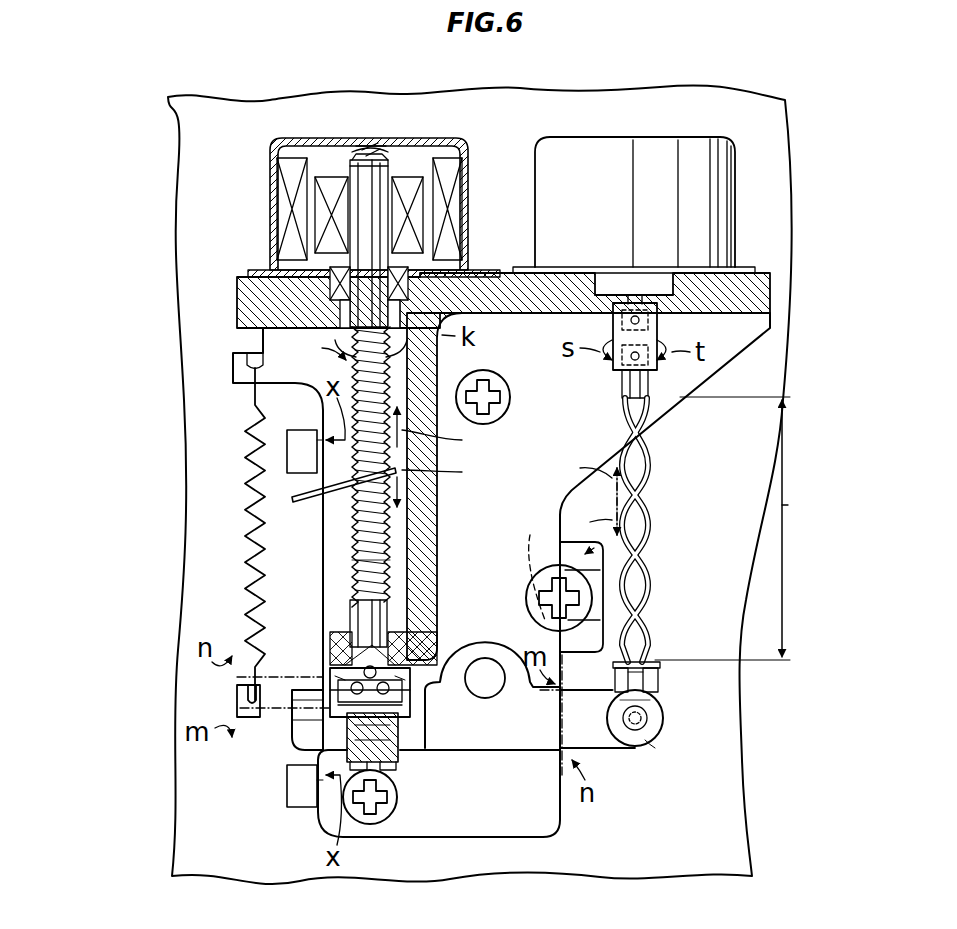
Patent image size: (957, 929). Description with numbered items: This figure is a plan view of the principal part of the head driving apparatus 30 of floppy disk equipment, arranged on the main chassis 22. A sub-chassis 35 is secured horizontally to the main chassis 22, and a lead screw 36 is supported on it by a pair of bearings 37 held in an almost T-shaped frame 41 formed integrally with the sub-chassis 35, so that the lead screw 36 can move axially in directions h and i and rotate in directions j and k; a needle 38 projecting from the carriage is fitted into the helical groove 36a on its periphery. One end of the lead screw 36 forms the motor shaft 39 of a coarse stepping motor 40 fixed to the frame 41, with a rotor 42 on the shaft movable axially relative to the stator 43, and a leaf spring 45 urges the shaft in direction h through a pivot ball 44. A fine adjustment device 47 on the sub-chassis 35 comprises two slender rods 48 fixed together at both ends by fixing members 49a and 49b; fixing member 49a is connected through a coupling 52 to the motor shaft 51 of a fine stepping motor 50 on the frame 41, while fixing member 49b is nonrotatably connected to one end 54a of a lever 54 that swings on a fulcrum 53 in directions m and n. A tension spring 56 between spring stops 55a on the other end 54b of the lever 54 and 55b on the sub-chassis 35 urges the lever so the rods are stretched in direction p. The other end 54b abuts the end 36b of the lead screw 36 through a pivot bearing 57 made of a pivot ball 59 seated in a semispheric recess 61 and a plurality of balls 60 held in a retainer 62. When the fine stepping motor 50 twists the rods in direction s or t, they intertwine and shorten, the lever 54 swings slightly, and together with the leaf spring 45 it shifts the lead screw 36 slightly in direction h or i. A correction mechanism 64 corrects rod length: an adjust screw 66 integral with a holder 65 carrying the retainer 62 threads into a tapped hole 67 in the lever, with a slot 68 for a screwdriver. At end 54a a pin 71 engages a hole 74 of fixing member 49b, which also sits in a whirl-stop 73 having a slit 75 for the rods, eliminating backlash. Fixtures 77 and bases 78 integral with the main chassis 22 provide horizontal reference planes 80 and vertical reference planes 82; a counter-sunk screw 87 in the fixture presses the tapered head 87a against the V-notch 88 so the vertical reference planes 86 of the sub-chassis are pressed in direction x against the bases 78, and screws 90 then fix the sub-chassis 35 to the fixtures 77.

The main chassis 22 is at (762, 117).
The head driving apparatus 30 is at (236, 406).
The sub-chassis 35 is at (553, 828).
The lead screw 36 is at (365, 520).
The helical groove 36a is at (355, 578).
The one end of the lead screw 36b is at (358, 650).
The bearings 37 is at (335, 300).
The needle 38 is at (322, 485).
The motor shaft 39 is at (360, 224).
The coarse stepping motor 40 is at (426, 130).
The frame 41 is at (500, 276).
The rotor 42 is at (331, 185).
The stator 43 is at (291, 160).
The pivot ball 44 is at (366, 150).
The leaf spring 45 is at (385, 150).
The fine adjustment device 47 is at (663, 629).
The slender rods 48 is at (633, 476).
The fixing member 49a is at (622, 386).
The fixing member 49b is at (650, 717).
The fine stepping motor 50 is at (712, 132).
The motor shaft 51 is at (637, 302).
The coupling 52 is at (658, 329).
The fulcrum 53 is at (485, 676).
The lever 54 is at (553, 748).
The one end of the lever 54a is at (648, 744).
The other end of the lever 54b is at (328, 748).
The spring stop 55a is at (237, 694).
The spring stop 55b is at (247, 361).
The tension spring 56 is at (297, 476).
The pivot bearing 57 is at (350, 680).
The pivot ball 59 is at (415, 655).
The balls 60 is at (405, 703).
The semispheric recess 61 is at (428, 592).
The retainer 62 is at (315, 710).
The correction mechanism 64 is at (405, 768).
The holder 65 is at (400, 690).
The adjust screw 66 is at (400, 730).
The tapped hole 67 is at (398, 760).
The slot 68 is at (375, 768).
The pin 71 is at (640, 738).
The whirl-stop 73 is at (620, 680).
The hole 74 is at (645, 696).
The slit 75 is at (615, 705).
The fixtures 77 is at (600, 548).
The bases 78 is at (255, 431).
The horizontal reference planes 80 is at (603, 570).
The vertical reference planes 82 is at (300, 447).
The vertical reference planes 86 is at (300, 483).
The counter-sunk screw 87 is at (600, 618).
The head 87a is at (600, 575).
The V-notch 88 is at (528, 566).
The screws 90 is at (492, 380).